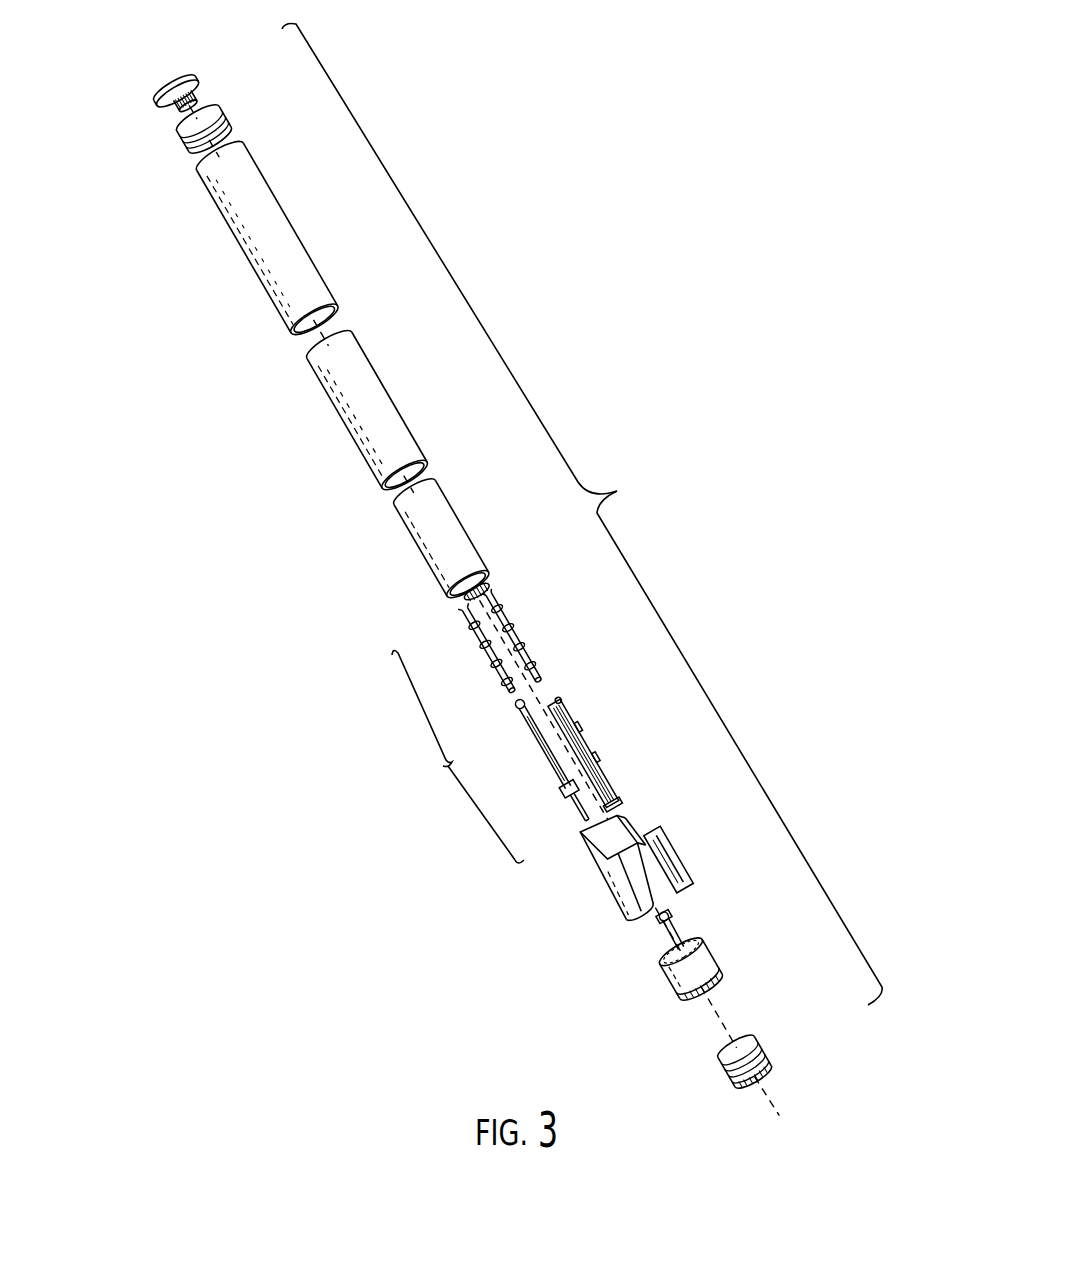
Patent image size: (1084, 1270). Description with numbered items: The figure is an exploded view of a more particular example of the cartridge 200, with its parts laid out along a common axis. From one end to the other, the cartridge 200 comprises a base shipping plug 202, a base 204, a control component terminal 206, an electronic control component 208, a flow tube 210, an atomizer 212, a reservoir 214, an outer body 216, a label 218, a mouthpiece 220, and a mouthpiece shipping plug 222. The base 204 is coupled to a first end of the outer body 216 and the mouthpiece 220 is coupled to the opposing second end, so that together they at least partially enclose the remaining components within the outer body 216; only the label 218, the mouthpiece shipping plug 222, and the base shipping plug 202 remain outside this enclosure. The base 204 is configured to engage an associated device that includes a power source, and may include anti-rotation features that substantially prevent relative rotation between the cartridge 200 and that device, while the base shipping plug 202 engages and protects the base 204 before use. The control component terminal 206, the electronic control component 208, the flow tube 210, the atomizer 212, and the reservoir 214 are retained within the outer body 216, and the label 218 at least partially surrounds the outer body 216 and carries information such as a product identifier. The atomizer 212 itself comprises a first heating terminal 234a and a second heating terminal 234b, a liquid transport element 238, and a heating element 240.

The cartridge 200 is at (582, 514).
The base shipping plug 202 is at (770, 1052).
The base 204 is at (675, 988).
The control component terminal 206 is at (675, 920).
The electronic control component 208 is at (682, 857).
The flow tube 210 is at (587, 850).
The atomizer 212 is at (458, 756).
The reservoir 214 is at (473, 540).
The outer body 216 is at (338, 420).
The label 218 is at (312, 257).
The mouthpiece 220 is at (229, 110).
The mouthpiece shipping plug 222 is at (208, 78).
The first heating terminal 234a is at (597, 752).
The second heating terminal 234b is at (553, 765).
The liquid transport element 238 is at (510, 688).
The heating element 240 is at (487, 645).